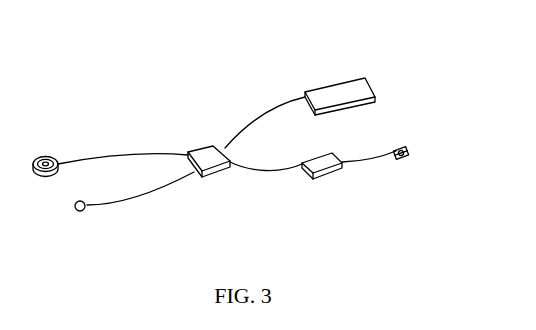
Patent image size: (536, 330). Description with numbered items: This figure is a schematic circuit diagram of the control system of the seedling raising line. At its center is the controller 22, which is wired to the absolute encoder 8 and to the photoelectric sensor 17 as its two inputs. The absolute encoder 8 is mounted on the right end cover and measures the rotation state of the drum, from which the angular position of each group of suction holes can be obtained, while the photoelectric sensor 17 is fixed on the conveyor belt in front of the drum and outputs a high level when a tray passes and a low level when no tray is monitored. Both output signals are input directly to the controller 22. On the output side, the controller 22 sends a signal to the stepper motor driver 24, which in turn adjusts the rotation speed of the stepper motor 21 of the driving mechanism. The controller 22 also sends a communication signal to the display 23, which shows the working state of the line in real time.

The absolute encoder 8 is at (50, 160).
The photoelectric sensor 17 is at (85, 207).
The controller 22 is at (207, 152).
The display 23 is at (330, 97).
The stepper motor driver 24 is at (327, 172).
The stepper motor 21 is at (412, 142).